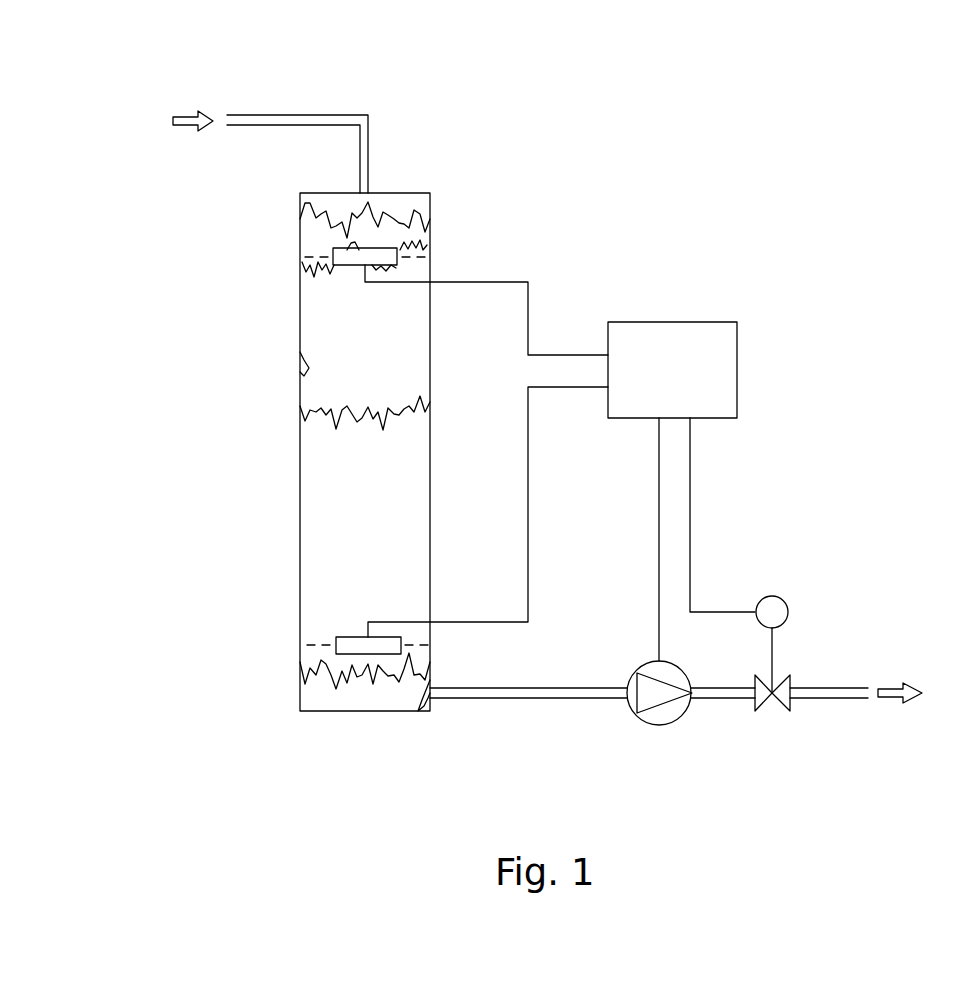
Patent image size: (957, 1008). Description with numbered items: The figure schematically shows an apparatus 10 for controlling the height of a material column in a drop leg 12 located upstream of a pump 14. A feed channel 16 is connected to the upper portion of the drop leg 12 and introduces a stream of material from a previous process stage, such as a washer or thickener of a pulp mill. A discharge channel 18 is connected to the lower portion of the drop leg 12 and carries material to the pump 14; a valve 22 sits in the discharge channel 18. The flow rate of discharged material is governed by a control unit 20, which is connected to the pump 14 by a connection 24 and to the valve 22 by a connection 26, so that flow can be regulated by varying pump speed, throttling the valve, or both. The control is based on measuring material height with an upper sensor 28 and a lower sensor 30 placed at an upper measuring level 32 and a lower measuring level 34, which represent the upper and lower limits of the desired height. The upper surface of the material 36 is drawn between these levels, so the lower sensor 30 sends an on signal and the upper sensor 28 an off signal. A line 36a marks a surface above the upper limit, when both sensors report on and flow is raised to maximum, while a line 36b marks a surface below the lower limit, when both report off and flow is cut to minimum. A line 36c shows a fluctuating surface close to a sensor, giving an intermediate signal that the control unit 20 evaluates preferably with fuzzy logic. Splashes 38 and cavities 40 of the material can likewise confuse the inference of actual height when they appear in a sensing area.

The apparatus 10 is at (740, 224).
The drop leg 12 is at (300, 468).
The pump 14 is at (665, 725).
The feed channel 16 is at (293, 114).
The discharge channel 18 is at (567, 700).
The control unit 20 is at (738, 393).
The valve 22 is at (785, 680).
The connection 24 is at (657, 550).
The connection 26 is at (690, 535).
The upper sensor 28 is at (332, 250).
The lower sensor 30 is at (343, 637).
The upper measuring level 32 is at (317, 270).
The lower measuring level 34 is at (330, 647).
The upper surface of the material 36 is at (403, 420).
The line indicating material height above upper limit 36a is at (413, 222).
The line indicating material height below lower limit 36b is at (420, 673).
The line indicating fluctuating surface near a sensor 36c is at (427, 247).
The splashes 38 is at (302, 362).
The cavities 40 is at (430, 705).